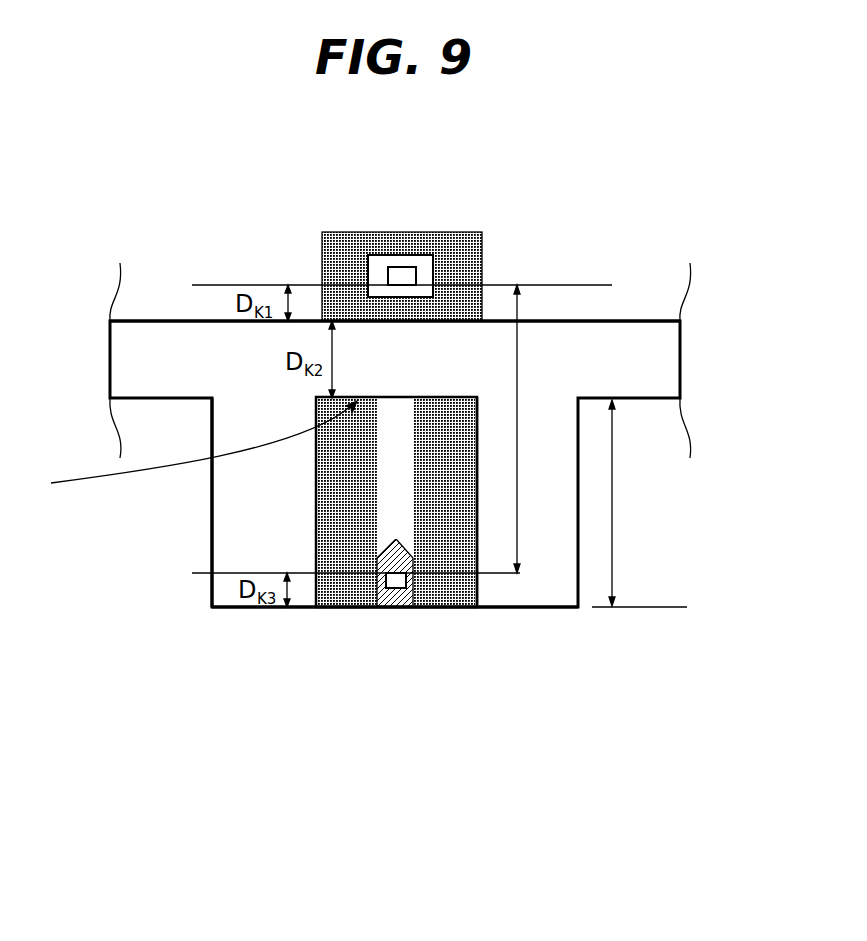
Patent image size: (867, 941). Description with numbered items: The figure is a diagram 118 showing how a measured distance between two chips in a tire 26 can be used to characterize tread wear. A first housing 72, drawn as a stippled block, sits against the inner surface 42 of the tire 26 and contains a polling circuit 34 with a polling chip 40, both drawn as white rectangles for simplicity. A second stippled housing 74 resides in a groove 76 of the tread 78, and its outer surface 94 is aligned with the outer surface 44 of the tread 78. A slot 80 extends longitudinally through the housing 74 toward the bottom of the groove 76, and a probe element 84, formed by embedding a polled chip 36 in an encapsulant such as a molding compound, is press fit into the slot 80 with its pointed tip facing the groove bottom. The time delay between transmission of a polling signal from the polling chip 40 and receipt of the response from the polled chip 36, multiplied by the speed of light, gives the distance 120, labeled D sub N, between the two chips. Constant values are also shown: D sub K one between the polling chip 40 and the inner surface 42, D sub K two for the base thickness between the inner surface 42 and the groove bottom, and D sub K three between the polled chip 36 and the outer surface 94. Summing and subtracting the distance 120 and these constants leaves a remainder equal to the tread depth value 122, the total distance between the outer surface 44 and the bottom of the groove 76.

The tire 26 is at (125, 355).
The polling circuit 34 is at (376, 253).
The polled chip 36 is at (398, 585).
The polling chip 40 is at (402, 262).
The inner surface 42 is at (173, 321).
The outer surface 44 is at (543, 607).
The housing 72 is at (322, 232).
The housing 74 is at (332, 593).
The groove 76 is at (480, 539).
The tread 78 is at (203, 513).
The slot 80 is at (380, 514).
The probe element 84 is at (388, 607).
The outer surface 94 is at (342, 607).
The diagram 118 is at (562, 811).
The distance 120 is at (562, 372).
The tread depth value 122 is at (715, 533).